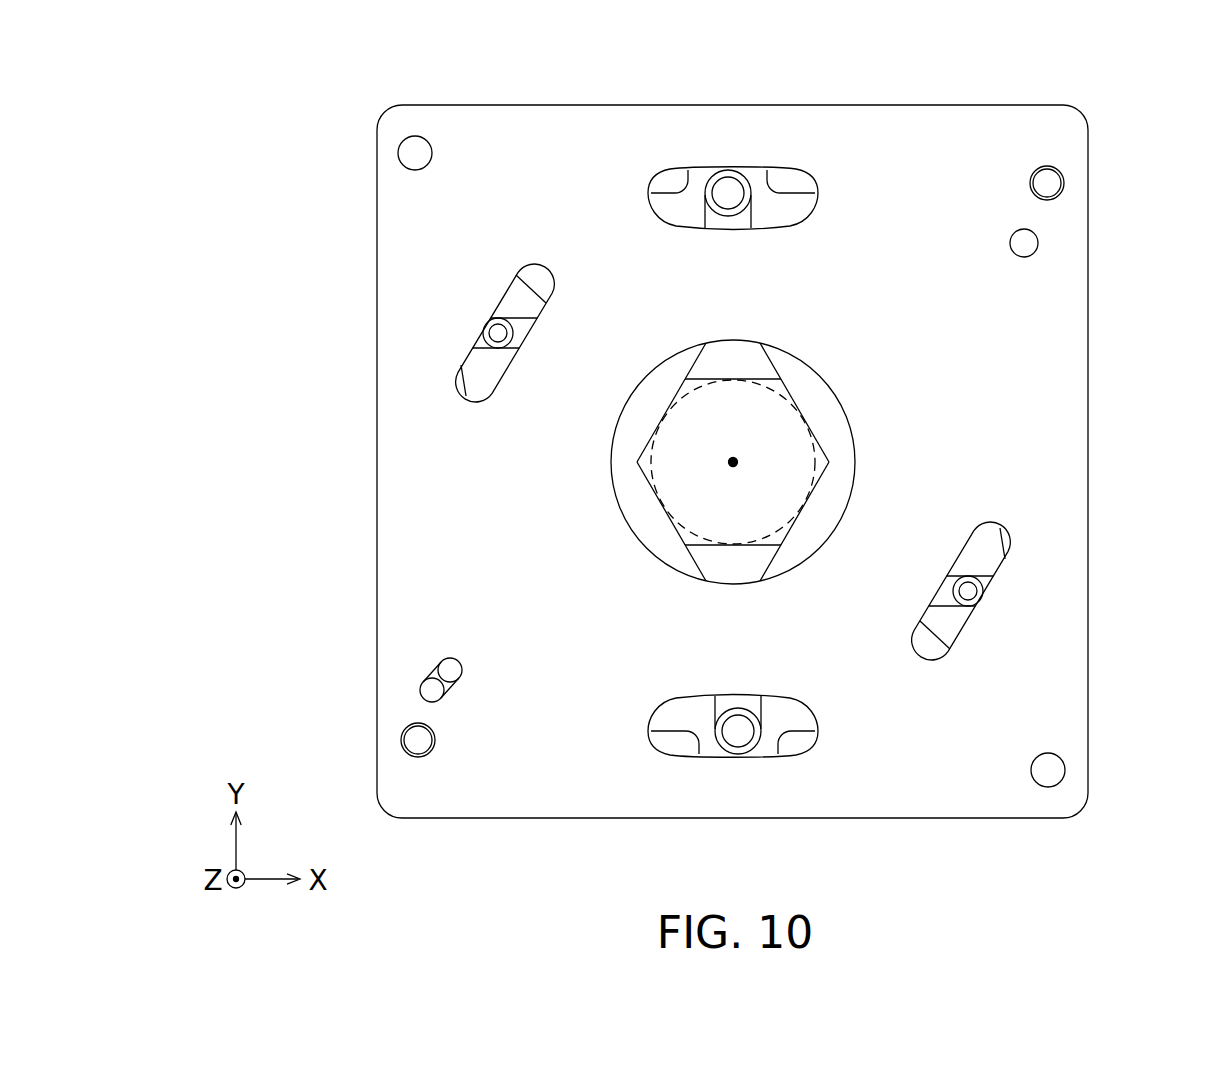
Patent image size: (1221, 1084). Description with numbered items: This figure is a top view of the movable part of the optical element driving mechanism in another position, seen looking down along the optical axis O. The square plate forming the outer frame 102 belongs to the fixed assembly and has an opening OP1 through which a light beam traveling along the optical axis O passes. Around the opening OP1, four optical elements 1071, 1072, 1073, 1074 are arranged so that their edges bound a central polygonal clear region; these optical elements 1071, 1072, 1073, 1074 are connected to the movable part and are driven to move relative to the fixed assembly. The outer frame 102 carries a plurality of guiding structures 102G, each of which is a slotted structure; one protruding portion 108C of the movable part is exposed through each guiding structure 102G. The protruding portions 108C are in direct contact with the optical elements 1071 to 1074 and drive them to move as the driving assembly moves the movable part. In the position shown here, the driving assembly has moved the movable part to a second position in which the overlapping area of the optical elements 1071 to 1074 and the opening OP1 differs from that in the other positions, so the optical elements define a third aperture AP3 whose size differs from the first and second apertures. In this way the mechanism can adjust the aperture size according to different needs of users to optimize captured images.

The outer frame 102 is at (1065, 140).
The guiding structure 102G is at (690, 168).
The protruding portion 108C is at (729, 186).
The optical element 1071 is at (817, 400).
The optical element 1072 is at (735, 358).
The optical element 1073 is at (642, 512).
The optical element 1074 is at (730, 567).
The opening OP1 is at (855, 452).
The third aperture AP3 is at (637, 462).
The optical axis O is at (748, 463).